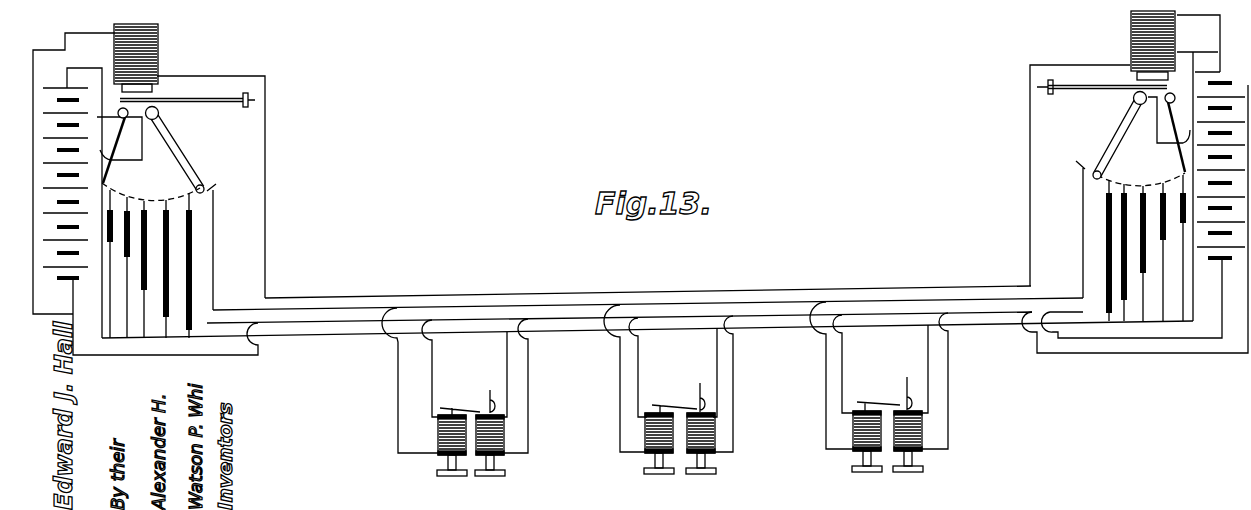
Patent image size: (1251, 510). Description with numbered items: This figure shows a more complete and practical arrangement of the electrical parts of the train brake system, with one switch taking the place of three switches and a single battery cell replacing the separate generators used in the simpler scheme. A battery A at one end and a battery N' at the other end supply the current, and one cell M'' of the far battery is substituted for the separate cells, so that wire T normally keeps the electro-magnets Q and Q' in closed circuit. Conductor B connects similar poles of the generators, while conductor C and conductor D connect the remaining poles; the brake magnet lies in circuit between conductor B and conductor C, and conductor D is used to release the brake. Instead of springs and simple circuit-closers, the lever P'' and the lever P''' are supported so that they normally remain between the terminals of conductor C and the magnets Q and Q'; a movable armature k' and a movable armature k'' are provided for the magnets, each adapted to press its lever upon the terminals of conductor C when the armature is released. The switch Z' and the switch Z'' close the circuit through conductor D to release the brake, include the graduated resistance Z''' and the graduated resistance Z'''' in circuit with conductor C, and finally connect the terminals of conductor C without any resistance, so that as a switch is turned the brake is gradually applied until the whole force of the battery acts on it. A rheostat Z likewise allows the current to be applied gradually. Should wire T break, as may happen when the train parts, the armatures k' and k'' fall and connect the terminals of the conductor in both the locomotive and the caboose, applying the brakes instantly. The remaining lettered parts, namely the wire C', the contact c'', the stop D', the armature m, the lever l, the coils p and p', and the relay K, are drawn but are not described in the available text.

The battery A is at (145, 194).
The battery wire C' is at (84, 195).
The electro-magnet Q is at (142, 58).
The armature k' is at (187, 93).
The lever P'' is at (199, 117).
The contact arm c'' is at (119, 145).
The switch Z' is at (175, 150).
The stop wire D' is at (221, 238).
The conductor D is at (643, 229).
The switch Z'' is at (650, 215).
The graduated resistance Z''' is at (224, 262).
The wire T is at (643, 182).
The conductor C is at (647, 335).
The conductor B is at (990, 318).
The electro-magnet Q' is at (1141, 45).
The cell M'' is at (1208, 186).
The armature k'' is at (1102, 79).
The lever P''' is at (1062, 100).
The battery N' is at (1135, 184).
The graduated resistance Z'''' is at (1052, 243).
The rheostat Z is at (1131, 248).
The armature m is at (460, 405).
The lever l is at (488, 395).
The relay coil p is at (424, 392).
The relay coil p' is at (501, 397).
The relay K is at (455, 405).